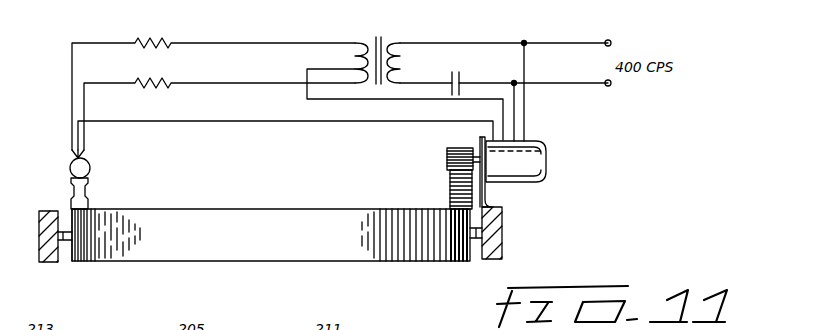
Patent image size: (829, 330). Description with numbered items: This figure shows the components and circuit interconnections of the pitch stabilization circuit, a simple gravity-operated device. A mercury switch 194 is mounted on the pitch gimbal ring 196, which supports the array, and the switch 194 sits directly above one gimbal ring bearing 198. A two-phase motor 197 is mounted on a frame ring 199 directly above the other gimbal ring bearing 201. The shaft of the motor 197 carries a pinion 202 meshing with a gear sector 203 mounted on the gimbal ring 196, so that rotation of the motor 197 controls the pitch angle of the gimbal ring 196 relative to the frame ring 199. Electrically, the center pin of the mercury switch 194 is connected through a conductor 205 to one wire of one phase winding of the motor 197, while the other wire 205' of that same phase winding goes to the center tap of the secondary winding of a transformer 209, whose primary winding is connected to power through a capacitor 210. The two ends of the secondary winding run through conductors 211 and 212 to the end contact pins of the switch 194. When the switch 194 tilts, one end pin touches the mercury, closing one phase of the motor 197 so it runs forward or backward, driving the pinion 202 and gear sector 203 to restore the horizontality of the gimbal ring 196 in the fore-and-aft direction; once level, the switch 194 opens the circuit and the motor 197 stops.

The mercury switch 194 is at (70, 168).
The pitch gimbal ring 196 is at (78, 262).
The two-phase motor 197 is at (547, 162).
The gimbal ring bearing 198 is at (59, 262).
The frame ring 199 is at (502, 227).
The gimbal ring bearing 201 is at (477, 240).
The pinion 202 is at (447, 158).
The gear sector 203 is at (450, 190).
The conductor 205 is at (285, 135).
The wire 205' is at (380, 104).
The transformer 209 is at (383, 40).
The capacitor 210 is at (455, 71).
The conductor 211 is at (243, 81).
The conductor 212 is at (243, 42).